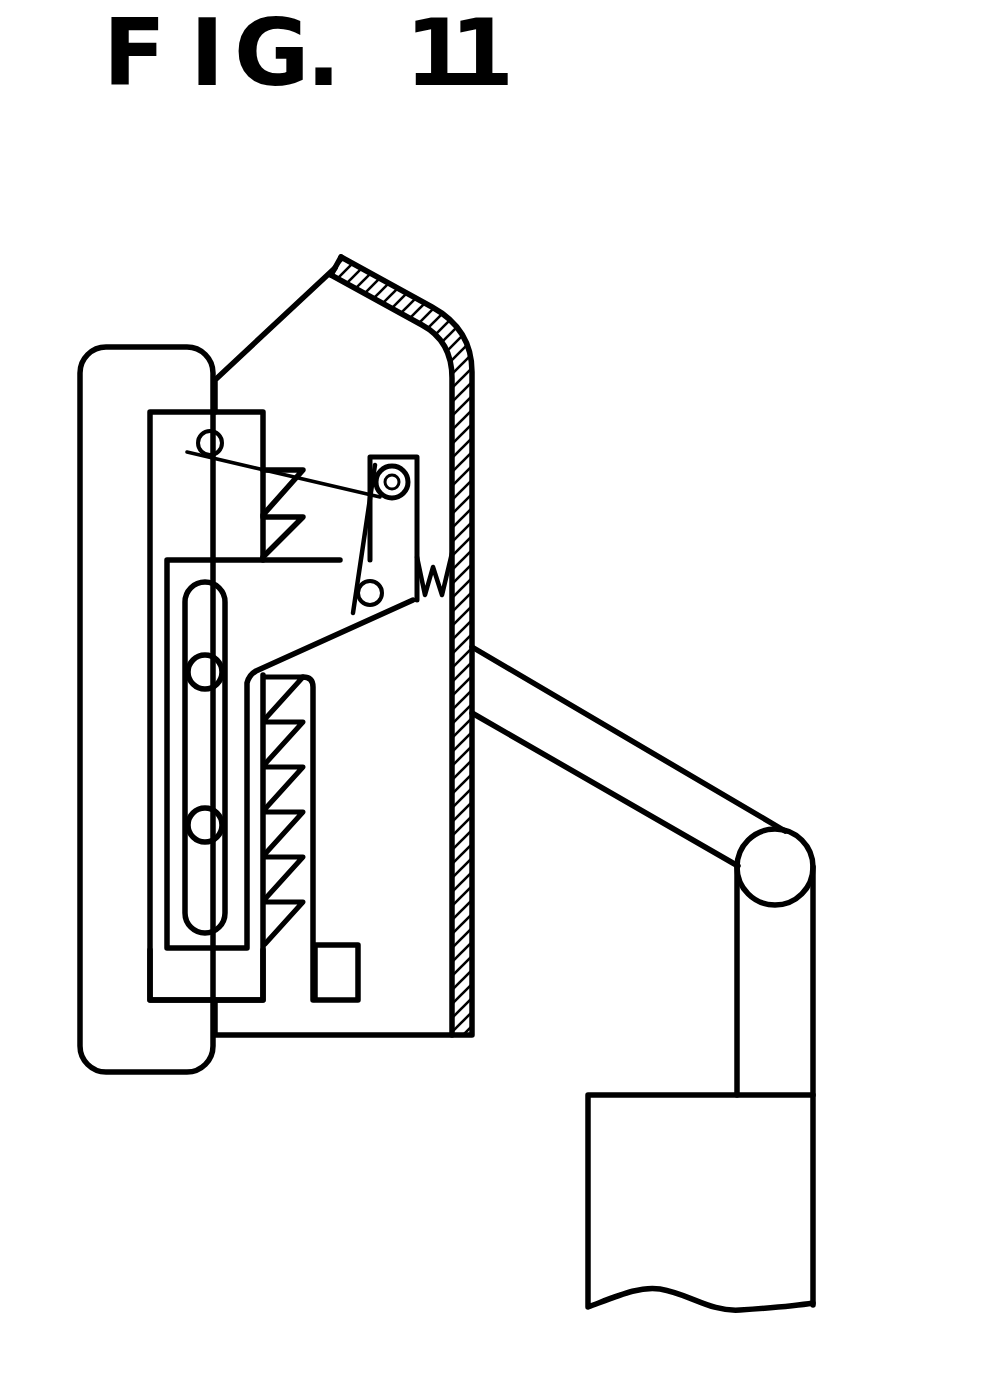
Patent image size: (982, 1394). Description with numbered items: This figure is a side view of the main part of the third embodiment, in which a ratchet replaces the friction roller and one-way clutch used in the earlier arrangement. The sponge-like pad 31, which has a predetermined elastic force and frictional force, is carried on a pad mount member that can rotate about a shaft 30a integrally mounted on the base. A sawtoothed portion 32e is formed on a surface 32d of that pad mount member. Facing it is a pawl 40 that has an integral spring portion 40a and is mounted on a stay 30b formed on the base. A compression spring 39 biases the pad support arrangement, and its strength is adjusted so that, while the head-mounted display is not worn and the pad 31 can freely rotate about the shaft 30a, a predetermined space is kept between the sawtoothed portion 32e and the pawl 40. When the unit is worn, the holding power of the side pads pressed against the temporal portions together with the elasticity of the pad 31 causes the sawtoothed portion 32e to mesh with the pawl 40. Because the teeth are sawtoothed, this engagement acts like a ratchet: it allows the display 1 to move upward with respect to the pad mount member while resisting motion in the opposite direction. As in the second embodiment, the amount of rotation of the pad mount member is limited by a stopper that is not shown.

The display 1 is at (787, 1218).
The sponge-like pad 31 is at (130, 382).
The shaft 30a is at (413, 480).
The stay 30b is at (337, 968).
The surface of pad mount member 32d is at (267, 980).
The sawtoothed portion 32e is at (283, 867).
The compression spring 39 is at (432, 545).
The pawl 40 is at (320, 703).
The spring portion 40a is at (320, 792).